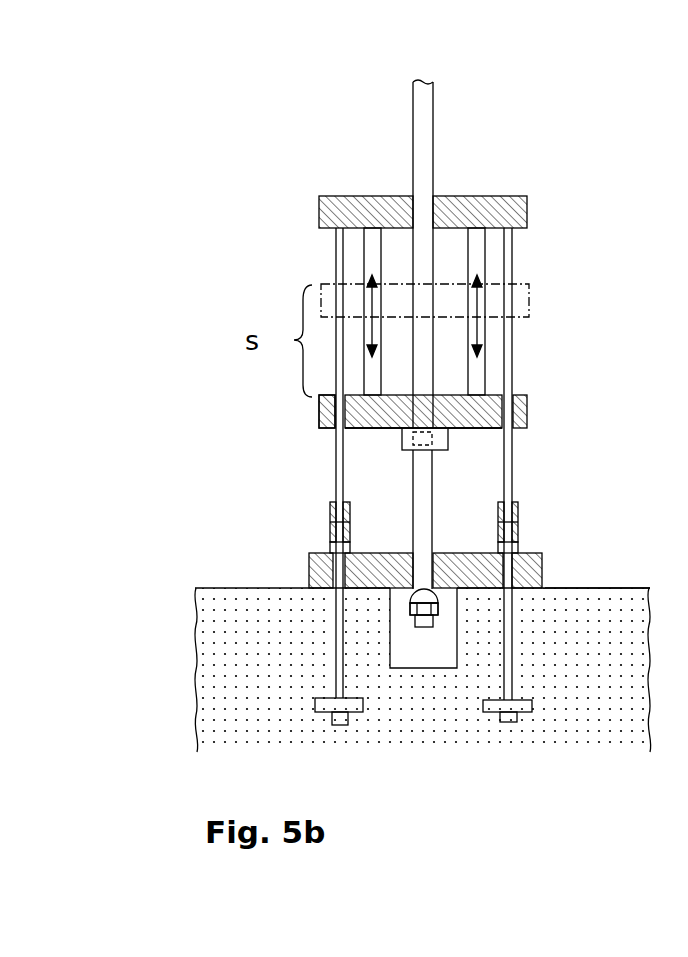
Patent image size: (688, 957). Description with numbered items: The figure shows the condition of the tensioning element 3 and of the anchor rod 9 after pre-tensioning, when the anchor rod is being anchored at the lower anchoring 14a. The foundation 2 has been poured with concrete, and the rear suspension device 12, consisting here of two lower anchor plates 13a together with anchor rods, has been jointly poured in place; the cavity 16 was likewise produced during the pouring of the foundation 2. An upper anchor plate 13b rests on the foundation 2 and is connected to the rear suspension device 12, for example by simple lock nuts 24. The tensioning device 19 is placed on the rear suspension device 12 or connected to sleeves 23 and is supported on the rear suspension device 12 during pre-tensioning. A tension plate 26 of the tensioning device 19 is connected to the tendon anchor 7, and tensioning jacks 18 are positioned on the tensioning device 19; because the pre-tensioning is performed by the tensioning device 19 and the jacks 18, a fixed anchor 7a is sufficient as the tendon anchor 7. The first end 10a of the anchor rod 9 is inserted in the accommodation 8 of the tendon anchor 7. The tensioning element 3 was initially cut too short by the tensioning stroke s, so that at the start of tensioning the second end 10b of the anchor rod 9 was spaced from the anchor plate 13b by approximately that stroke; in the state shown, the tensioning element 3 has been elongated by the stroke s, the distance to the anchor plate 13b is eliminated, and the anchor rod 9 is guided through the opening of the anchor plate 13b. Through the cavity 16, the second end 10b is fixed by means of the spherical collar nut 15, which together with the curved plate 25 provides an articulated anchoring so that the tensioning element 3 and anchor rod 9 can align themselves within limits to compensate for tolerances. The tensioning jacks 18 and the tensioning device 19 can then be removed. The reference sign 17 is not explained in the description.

The foundation 2 is at (423, 703).
The tensioning element 3 is at (477, 253).
The tendon anchor 7 is at (324, 423).
The fixed anchor 7a is at (324, 435).
The accommodation 8 is at (430, 441).
The anchor rod 9 is at (451, 519).
The first end of the anchor rod 10a is at (498, 446).
The second end of the anchor rod 10b is at (476, 721).
The rear suspension device 12 is at (328, 655).
The lower anchor plate 13a is at (322, 690).
The upper anchor plate 13b is at (347, 548).
The lower anchoring 14a is at (395, 611).
The spherical collar nut 15 is at (513, 572).
The cavity 16 is at (407, 702).
The ground surface 17 is at (627, 588).
The tensioning jack 18 is at (366, 306).
The tensioning device 19 is at (521, 388).
The sleeve 23 is at (557, 503).
The lock nut 24 is at (360, 509).
The curved plate 25 is at (513, 556).
The tension plate 26 is at (239, 389).